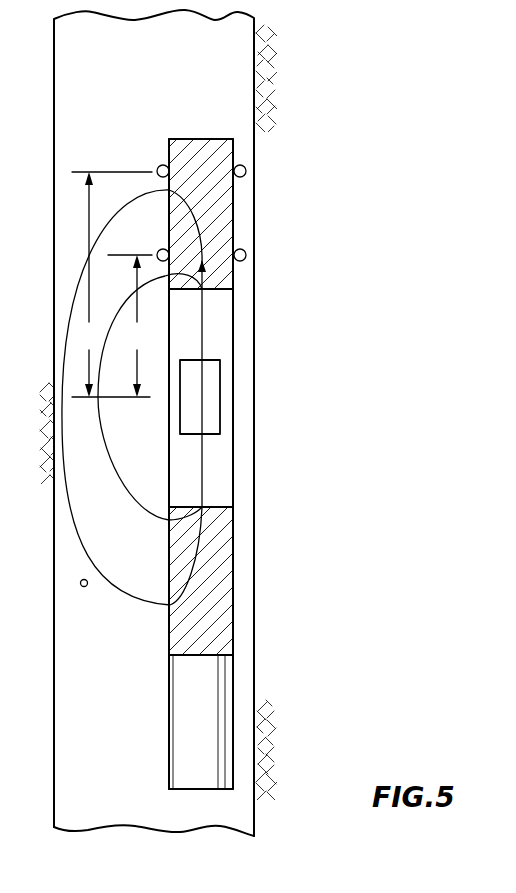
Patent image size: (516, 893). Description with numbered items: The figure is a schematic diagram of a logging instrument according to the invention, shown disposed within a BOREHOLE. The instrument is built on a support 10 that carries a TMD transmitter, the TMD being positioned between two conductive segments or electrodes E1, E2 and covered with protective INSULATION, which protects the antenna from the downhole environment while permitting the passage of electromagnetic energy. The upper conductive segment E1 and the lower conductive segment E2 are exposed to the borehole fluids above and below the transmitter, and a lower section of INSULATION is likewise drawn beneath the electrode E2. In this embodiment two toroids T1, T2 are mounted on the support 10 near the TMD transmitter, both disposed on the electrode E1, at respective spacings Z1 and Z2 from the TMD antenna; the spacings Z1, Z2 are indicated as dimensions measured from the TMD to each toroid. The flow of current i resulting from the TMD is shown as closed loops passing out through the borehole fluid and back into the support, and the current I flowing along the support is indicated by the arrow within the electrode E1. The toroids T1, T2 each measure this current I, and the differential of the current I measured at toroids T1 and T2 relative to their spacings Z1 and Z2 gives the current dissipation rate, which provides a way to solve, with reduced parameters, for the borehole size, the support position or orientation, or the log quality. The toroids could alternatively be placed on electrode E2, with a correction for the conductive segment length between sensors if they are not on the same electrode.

The support 10 is at (242, 152).
The toroid T2 is at (246, 171).
The conductive segment (electrode) E1 is at (234, 225).
The toroid T1 is at (246, 255).
The insulation INSULATION is at (234, 342).
The TMD transmitter (antenna) TMD is at (236, 423).
The conductive segment (electrode) E2 is at (247, 565).
The borehole BOREHOLE is at (262, 646).
The current I is at (206, 378).
The spacing Z1 is at (150, 387).
The spacing Z2 is at (132, 388).
The current flow i is at (77, 579).